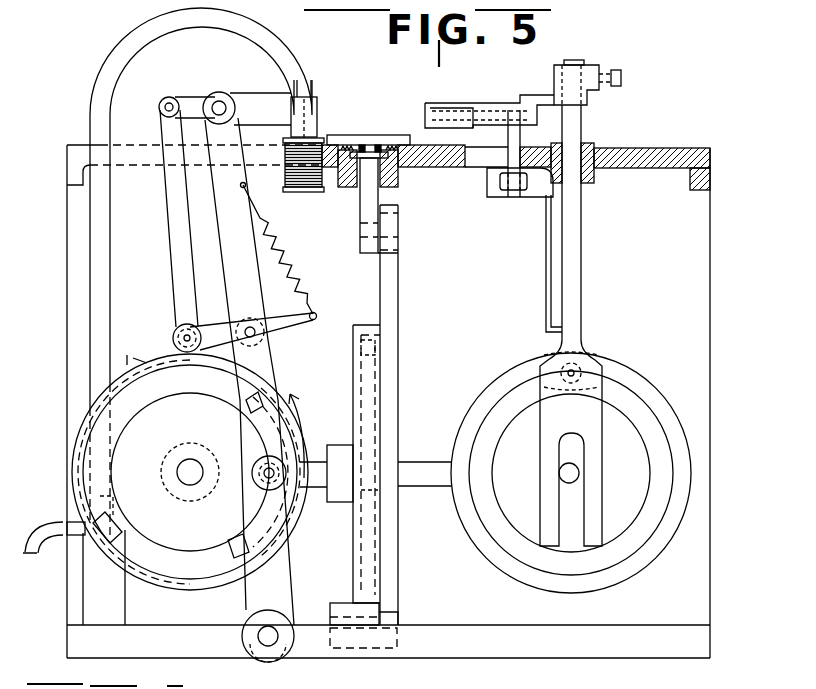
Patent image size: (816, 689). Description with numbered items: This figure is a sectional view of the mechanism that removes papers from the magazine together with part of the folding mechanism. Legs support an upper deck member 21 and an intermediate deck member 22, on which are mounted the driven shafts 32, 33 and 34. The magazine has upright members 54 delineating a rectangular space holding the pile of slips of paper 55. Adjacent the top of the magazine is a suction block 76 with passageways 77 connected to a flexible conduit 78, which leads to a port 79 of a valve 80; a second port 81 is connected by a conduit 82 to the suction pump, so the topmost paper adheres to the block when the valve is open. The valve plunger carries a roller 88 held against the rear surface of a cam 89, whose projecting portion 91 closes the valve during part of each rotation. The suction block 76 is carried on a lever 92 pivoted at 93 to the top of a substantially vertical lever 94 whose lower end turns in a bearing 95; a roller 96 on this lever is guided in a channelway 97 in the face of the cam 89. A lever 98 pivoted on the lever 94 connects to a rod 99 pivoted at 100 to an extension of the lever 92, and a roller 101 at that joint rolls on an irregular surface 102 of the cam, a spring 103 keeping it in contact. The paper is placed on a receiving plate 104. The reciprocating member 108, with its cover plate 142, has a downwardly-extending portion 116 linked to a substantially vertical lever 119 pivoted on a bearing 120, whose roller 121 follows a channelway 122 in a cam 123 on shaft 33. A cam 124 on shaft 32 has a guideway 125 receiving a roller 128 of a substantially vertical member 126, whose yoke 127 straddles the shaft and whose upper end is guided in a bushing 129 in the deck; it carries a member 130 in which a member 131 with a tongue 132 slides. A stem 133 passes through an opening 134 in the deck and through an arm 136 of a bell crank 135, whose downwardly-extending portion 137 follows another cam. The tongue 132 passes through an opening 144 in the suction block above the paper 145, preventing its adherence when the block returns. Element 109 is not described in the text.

The upper deck member 21 is at (641, 150).
The intermediate deck member 22 is at (452, 632).
The shaft 32 is at (580, 474).
The shaft 33 is at (410, 466).
The shaft 34 is at (204, 458).
The upright members 54 is at (288, 180).
The slips of paper 55 is at (311, 195).
The suction block 76 is at (309, 92).
The passageways 77 is at (306, 114).
The flexible conduit 78 is at (140, 54).
The port 79 is at (110, 518).
The valve 80 is at (118, 584).
The second port 81 is at (82, 536).
The conduit 82 is at (36, 553).
The roller 88 is at (118, 540).
The cam 89 is at (201, 584).
The projecting portion 91 is at (262, 545).
The lever 92 is at (250, 97).
The pivot 93 is at (221, 92).
The substantially vertical lever 94 is at (226, 238).
The bearing 95 is at (265, 648).
The roller 96 is at (252, 496).
The channelway 97 is at (190, 472).
The lever 98 is at (212, 330).
The rod 99 is at (171, 238).
The pivot 100 is at (170, 97).
The roller 101 is at (174, 337).
The irregular surface 102 is at (133, 358).
The spring 103 is at (292, 258).
The receiving plate 104 is at (341, 135).
The reciprocating member 108 is at (389, 158).
The support blocks 109 is at (339, 180).
The downwardly-extending portion 116 is at (361, 228).
The substantially vertical lever 119 is at (392, 306).
The bearing 120 is at (334, 612).
The roller 121 is at (372, 490).
The channelway 122 is at (368, 352).
The cam 123 is at (354, 378).
The cam 124 is at (661, 396).
The guideway 125 is at (622, 540).
The substantially vertical member 126 is at (583, 290).
The yoke 127 is at (613, 560).
The roller 128 is at (584, 369).
The bushing 129 is at (590, 143).
The member 130 is at (554, 88).
The member 131 is at (470, 125).
The tongue 132 is at (390, 128).
The stem 133 is at (518, 133).
The opening 134 is at (479, 168).
The bell crank 135 is at (528, 192).
The arm 136 is at (497, 193).
The downwardly-extending portion 137 is at (546, 283).
The plate 142 is at (379, 140).
The opening 144 is at (388, 683).
The paper 145 is at (339, 680).